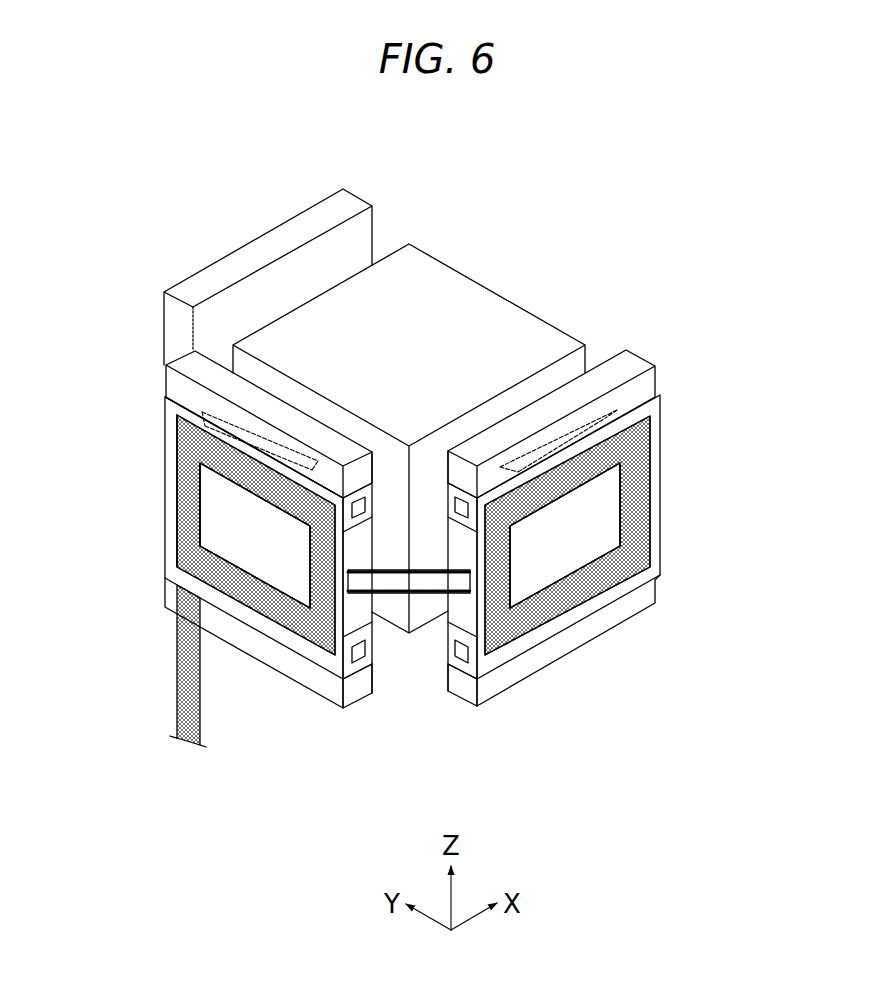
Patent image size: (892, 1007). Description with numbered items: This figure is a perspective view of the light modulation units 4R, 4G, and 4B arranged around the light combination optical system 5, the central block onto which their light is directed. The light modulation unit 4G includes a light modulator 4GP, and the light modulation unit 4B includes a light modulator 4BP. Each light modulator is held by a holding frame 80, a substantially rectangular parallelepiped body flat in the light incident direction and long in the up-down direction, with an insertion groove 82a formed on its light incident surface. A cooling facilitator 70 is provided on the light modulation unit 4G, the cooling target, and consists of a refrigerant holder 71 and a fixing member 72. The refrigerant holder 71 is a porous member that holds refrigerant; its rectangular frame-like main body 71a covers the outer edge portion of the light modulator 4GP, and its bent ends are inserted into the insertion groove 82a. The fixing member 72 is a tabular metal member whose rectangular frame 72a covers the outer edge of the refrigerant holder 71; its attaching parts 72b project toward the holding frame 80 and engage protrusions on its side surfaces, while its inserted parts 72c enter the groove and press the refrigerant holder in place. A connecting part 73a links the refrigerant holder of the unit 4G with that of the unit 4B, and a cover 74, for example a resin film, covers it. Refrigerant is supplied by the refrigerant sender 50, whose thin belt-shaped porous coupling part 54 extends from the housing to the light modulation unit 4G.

The light combination optical system 5 is at (477, 293).
The light modulation unit 4R is at (280, 222).
The light modulation unit 4G is at (212, 350).
The light modulation unit 4B is at (655, 356).
The holding frame 80 is at (350, 200).
The insertion groove 82a is at (268, 445).
The cooling facilitator 70 is at (255, 778).
The refrigerant holder 71 is at (290, 638).
The main body 71a is at (228, 600).
The fixing member 72 is at (322, 676).
The frame 72a is at (160, 397).
The attaching part 72b is at (373, 645).
The inserted part 72c is at (175, 420).
The connecting part 73a is at (471, 652).
The cover 74 is at (423, 585).
The light modulator 4GP is at (215, 525).
The light modulator 4BP is at (586, 545).
The refrigerant sender 50 is at (176, 692).
The coupling part 54 is at (176, 660).